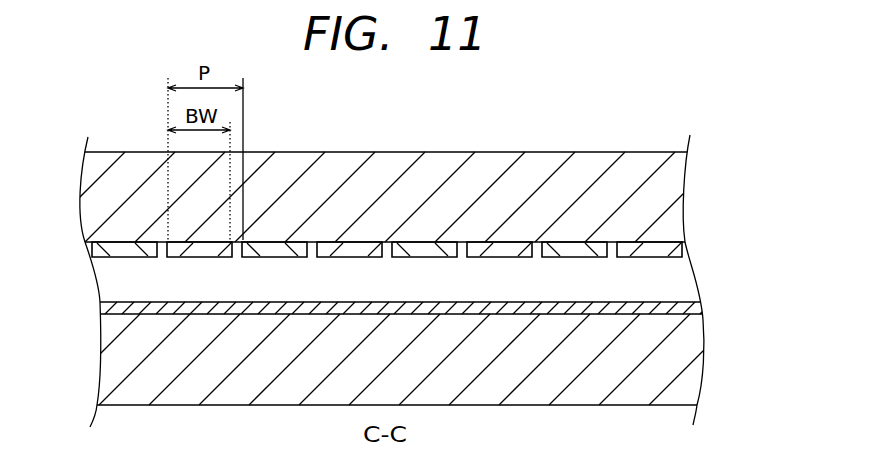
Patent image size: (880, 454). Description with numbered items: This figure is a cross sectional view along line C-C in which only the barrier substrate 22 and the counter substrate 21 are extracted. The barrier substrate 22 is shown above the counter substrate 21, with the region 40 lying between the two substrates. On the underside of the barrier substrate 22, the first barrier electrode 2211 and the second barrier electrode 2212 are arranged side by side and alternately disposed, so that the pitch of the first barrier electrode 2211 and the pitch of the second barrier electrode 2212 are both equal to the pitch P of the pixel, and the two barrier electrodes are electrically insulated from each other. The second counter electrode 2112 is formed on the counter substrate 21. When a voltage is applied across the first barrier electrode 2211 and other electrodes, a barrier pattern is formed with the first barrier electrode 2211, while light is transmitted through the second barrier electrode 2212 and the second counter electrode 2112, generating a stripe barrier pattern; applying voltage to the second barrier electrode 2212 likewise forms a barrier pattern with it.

The counter substrate 21 is at (663, 365).
The barrier substrate 22 is at (663, 198).
The gap between cover member and substrate 40 is at (108, 280).
The second counter electrode 2112 is at (650, 302).
The first barrier electrode 2211 is at (350, 250).
The second barrier electrode 2212 is at (423, 250).